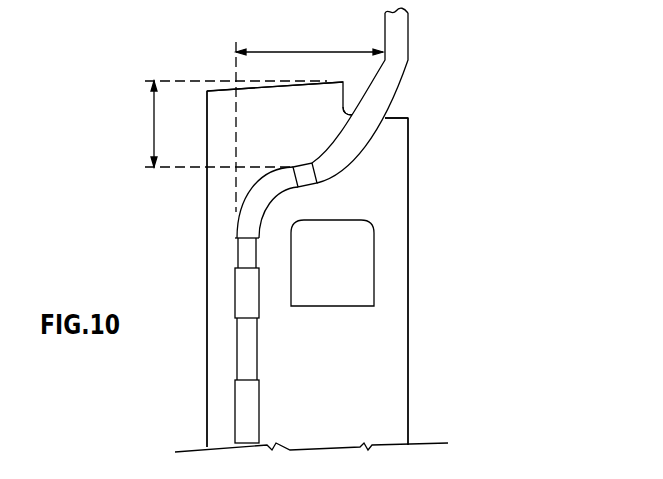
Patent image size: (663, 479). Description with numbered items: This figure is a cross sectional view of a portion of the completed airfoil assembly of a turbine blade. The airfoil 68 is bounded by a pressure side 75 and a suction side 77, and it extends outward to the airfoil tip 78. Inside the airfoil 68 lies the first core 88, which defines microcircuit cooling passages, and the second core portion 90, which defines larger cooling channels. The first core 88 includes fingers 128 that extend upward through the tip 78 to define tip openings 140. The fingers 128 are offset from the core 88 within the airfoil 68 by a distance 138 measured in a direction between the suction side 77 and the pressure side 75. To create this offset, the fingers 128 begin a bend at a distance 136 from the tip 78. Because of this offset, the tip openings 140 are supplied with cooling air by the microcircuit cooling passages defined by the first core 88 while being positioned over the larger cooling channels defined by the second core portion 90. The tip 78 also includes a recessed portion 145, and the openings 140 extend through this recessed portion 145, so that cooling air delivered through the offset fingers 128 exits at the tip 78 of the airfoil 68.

The airfoil 68 is at (380, 190).
The pressure side 75 is at (200, 232).
The suction side 77 is at (418, 218).
The airfoil tip 78 is at (218, 82).
The first core 88 is at (224, 303).
The second core portion 90 is at (391, 325).
The fingers 128 is at (388, 83).
The distance 136 is at (154, 125).
The distance 138 is at (313, 52).
The tip openings 140 is at (402, 108).
The recessed portion 145 is at (461, 29).